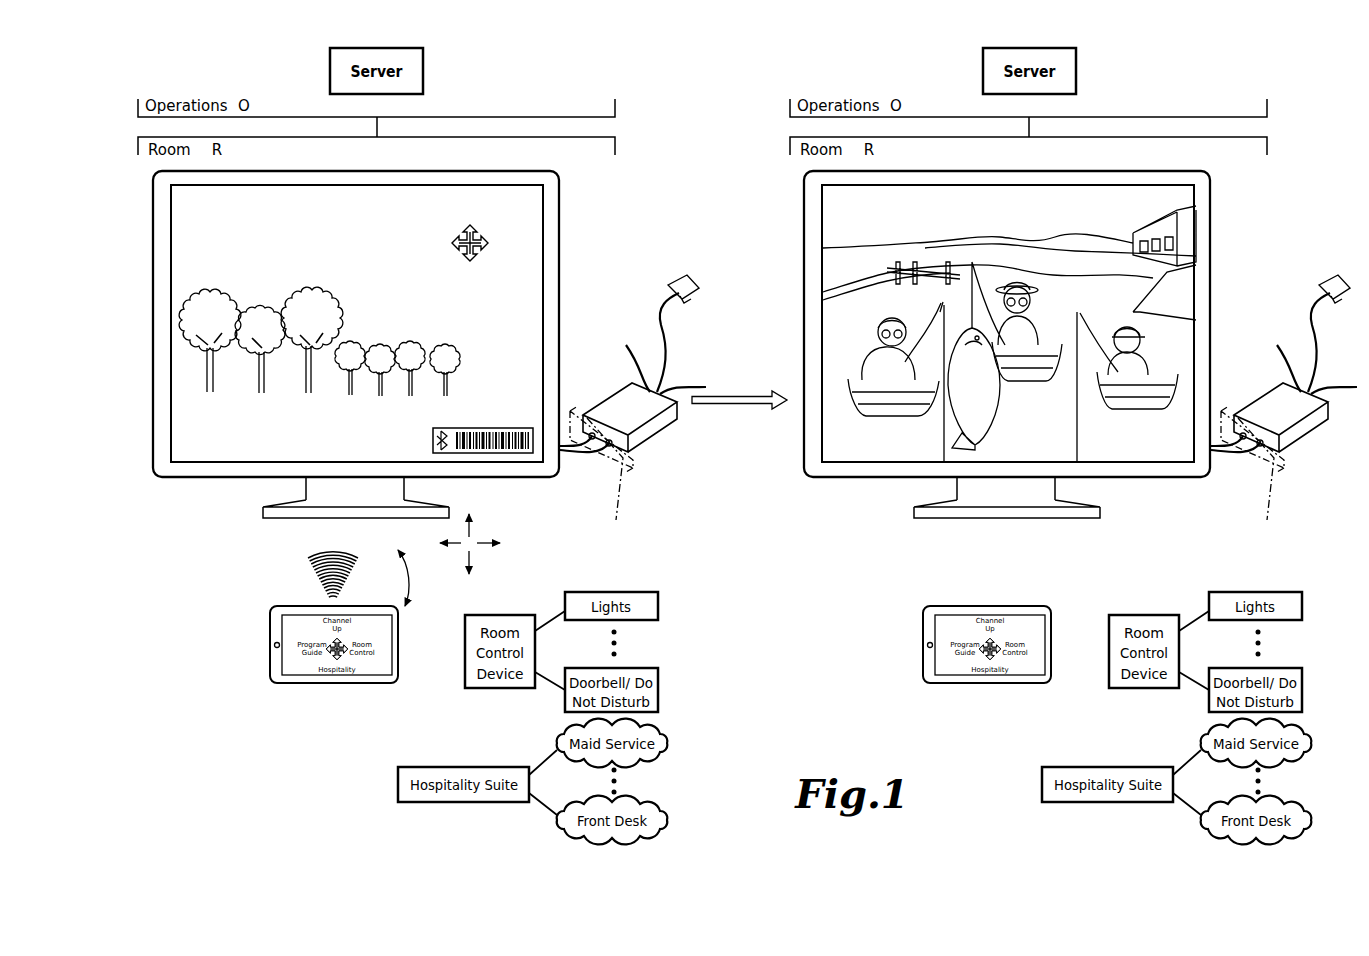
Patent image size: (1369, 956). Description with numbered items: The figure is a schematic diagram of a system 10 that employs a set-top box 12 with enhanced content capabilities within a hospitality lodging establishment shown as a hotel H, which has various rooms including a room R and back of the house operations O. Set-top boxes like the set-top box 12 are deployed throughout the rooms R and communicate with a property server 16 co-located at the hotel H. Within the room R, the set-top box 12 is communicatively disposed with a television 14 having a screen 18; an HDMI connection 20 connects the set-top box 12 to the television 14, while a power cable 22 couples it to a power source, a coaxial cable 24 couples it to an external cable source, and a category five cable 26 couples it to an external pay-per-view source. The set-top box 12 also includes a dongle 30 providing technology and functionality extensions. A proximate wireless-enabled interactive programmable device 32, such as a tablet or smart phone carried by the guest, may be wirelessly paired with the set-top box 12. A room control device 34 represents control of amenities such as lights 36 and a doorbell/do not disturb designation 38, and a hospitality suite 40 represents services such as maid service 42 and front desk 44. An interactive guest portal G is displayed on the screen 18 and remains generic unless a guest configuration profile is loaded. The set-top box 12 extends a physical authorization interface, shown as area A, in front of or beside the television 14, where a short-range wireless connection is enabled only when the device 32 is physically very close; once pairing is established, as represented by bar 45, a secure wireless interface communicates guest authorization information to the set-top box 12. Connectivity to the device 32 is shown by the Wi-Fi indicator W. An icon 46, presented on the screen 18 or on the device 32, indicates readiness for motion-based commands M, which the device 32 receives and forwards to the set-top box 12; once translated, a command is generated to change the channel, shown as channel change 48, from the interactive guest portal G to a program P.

The system 10 is at (658, 212).
The set-top box 12 is at (663, 431).
The television 14 is at (563, 243).
The property server 16 is at (423, 72).
The screen 18 is at (358, 222).
The HDMI connection 20 is at (585, 453).
The power cable 22 is at (567, 452).
The coaxial cable 24 is at (628, 348).
The category five (Cat 5) cable 26 is at (686, 384).
The dongle 30 is at (689, 280).
The proximate wireless-enabled interactive programmable device 32 is at (268, 631).
The room control device 34 is at (500, 615).
The lights 36 is at (658, 610).
The doorbell/do not disturb designation 38 is at (658, 690).
The hospitality suite 40 is at (398, 784).
The maid service 42 is at (667, 745).
The front desk 44 is at (667, 820).
The bar 45 is at (511, 455).
The icon 46 is at (483, 231).
The channel change 48 is at (722, 404).
The hotel H is at (734, 128).
The back of the house operations O is at (702, 117).
The room R is at (614, 127).
The interactive guest portal G is at (219, 448).
The program P is at (869, 452).
The Wi-Fi indicator W is at (352, 546).
The motion-based commands M is at (413, 578).
The physical authorization interface area A is at (470, 544).